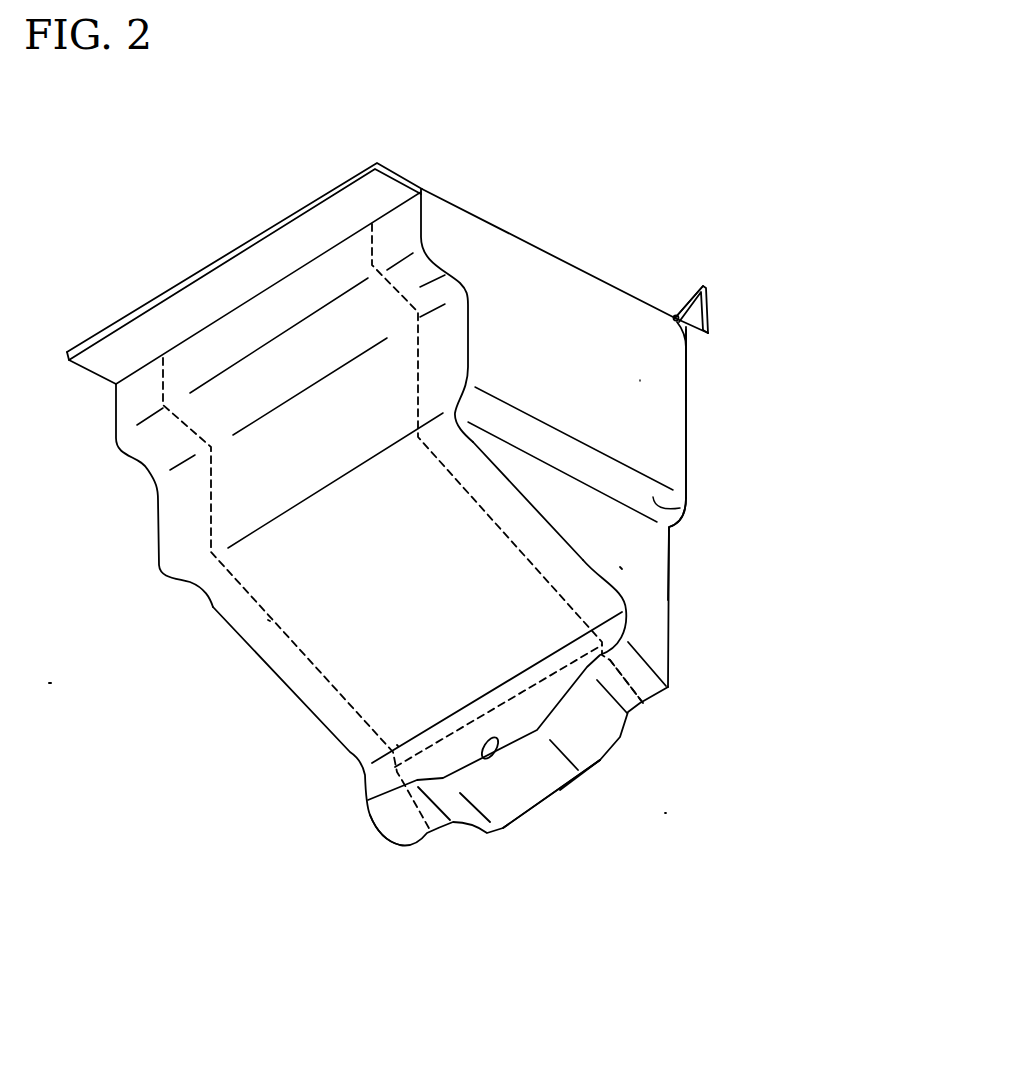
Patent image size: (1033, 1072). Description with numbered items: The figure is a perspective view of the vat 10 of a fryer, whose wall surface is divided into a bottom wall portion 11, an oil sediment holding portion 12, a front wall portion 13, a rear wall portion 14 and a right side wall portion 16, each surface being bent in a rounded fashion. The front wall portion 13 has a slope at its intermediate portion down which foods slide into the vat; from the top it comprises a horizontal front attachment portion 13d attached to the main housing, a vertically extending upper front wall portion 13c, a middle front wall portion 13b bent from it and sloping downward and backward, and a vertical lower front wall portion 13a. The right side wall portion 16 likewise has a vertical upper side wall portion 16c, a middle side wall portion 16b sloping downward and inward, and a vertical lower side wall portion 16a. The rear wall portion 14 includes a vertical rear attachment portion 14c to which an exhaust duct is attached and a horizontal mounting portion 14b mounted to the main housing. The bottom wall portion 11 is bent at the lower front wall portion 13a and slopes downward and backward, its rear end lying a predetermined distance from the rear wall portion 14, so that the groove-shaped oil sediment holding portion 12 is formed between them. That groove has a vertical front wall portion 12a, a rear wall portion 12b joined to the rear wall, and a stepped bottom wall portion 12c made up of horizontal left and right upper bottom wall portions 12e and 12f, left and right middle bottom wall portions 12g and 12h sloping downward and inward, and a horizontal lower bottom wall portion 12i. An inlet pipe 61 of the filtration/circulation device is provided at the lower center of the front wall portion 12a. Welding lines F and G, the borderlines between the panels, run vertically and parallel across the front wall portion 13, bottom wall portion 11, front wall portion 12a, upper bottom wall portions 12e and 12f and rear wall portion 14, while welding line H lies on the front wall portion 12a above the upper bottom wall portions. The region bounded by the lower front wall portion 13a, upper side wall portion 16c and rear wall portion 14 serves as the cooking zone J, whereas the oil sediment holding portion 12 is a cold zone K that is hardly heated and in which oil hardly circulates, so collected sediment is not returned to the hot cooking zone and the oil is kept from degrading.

The vat 10 is at (512, 213).
The bottom wall portion 11 is at (465, 535).
The oil sediment holding portion 12 is at (458, 697).
The front wall portion 12a is at (538, 675).
The rear wall portion 12b is at (660, 693).
The bottom wall portion 12c is at (542, 823).
The left upper bottom wall portion 12e is at (415, 820).
The right upper bottom wall portion 12f is at (637, 713).
The left middle bottom wall portion 12g is at (460, 813).
The right middle bottom wall portion 12h is at (583, 727).
The lower bottom wall portion 12i is at (543, 783).
The front wall portion 13 is at (210, 233).
The lower front wall portion 13a is at (452, 362).
The middle front wall portion 13b is at (453, 273).
The upper front wall portion 13c is at (313, 273).
The front attachment portion 13d is at (160, 315).
The rear wall portion 14 is at (722, 300).
The mounting portion 14b is at (700, 350).
The rear attachment portion 14c is at (692, 302).
The right side wall portion 16 is at (597, 318).
The lower side wall portion 16a is at (645, 545).
The middle side wall portion 16b is at (683, 510).
The upper side wall portion 16c is at (648, 357).
The inlet pipe 61 is at (497, 738).
The welding line F is at (270, 621).
The welding line G is at (620, 567).
The welding line H is at (418, 748).
The cooking zone J is at (617, 382).
The cold zone K is at (667, 813).